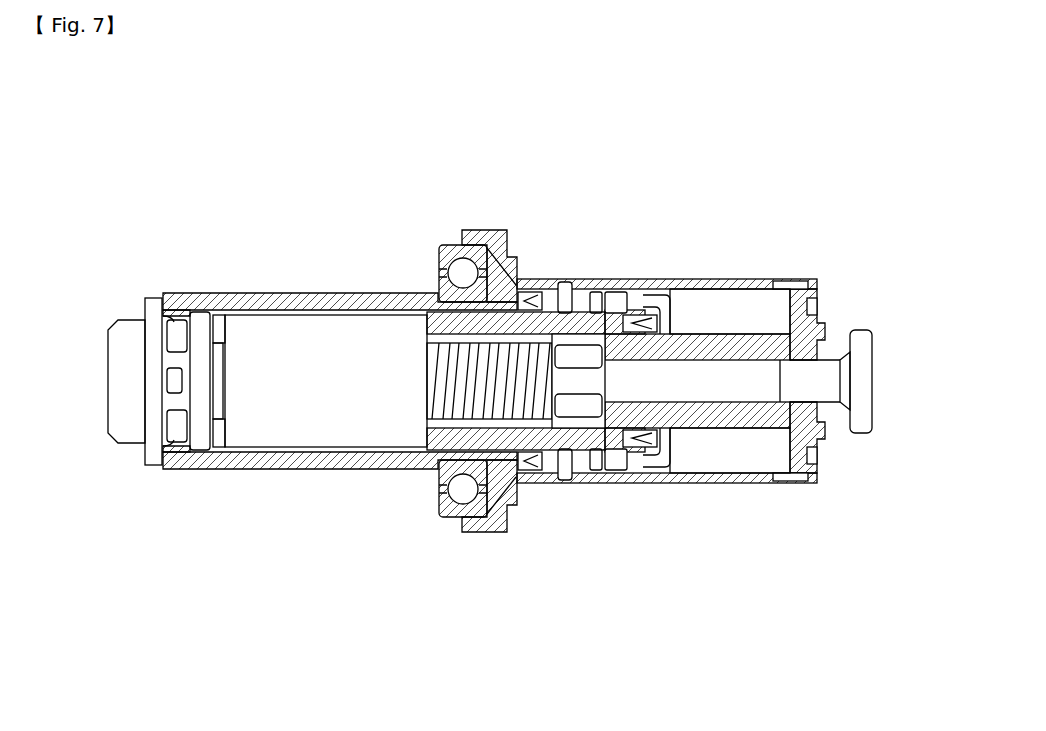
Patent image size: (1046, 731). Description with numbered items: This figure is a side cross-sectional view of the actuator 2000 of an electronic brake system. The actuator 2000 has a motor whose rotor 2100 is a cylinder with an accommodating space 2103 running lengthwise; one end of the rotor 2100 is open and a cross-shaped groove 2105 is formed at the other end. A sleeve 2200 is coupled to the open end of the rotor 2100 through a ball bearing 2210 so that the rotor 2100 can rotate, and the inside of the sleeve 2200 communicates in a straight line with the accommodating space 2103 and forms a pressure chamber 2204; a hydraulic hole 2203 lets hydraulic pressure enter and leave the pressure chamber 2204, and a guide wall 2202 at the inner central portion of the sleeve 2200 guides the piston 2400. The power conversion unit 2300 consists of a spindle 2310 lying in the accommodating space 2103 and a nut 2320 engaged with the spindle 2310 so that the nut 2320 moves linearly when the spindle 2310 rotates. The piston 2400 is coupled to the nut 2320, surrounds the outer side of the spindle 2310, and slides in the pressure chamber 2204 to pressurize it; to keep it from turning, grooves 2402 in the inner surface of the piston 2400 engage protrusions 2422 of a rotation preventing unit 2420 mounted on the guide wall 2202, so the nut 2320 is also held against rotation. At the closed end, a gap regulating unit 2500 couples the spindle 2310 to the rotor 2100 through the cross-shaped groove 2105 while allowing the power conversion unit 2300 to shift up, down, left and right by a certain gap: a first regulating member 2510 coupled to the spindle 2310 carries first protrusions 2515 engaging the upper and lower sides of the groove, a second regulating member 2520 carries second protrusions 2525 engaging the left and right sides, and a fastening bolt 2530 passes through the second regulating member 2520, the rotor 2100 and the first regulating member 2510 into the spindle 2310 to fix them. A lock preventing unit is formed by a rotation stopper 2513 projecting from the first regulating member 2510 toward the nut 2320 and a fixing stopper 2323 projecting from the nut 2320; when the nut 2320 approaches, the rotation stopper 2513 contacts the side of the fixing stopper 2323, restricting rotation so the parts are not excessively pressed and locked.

The actuator 2000 is at (533, 128).
The rotor 2100 is at (307, 300).
The accommodating space 2103 is at (192, 307).
The cross-shaped groove 2105 is at (172, 308).
The sleeve 2200 is at (708, 288).
The guide wall 2202 is at (683, 350).
The hydraulic hole 2203 is at (562, 288).
The pressure chamber 2204 is at (745, 312).
The ball bearing 2210 is at (450, 245).
The power conversion unit 2300 is at (388, 455).
The spindle 2310 is at (453, 420).
The nut 2320 is at (338, 433).
The fixing stopper 2323 is at (227, 308).
The piston 2400 is at (649, 382).
The grooves 2402 is at (535, 450).
The rotation preventing unit 2420 is at (599, 326).
The protrusions 2422 is at (580, 350).
The gap regulating unit 2500 is at (134, 446).
The first regulating member 2510 is at (205, 431).
The rotation stopper 2513 is at (214, 450).
The first protrusion 2515 is at (162, 333).
The second regulating member 2520 is at (153, 466).
The second protrusion 2525 is at (175, 380).
The fastening bolt 2530 is at (118, 444).